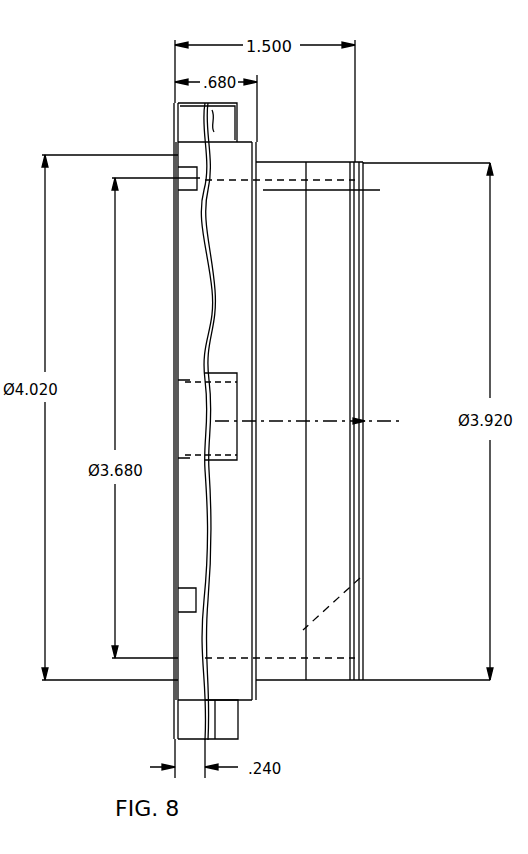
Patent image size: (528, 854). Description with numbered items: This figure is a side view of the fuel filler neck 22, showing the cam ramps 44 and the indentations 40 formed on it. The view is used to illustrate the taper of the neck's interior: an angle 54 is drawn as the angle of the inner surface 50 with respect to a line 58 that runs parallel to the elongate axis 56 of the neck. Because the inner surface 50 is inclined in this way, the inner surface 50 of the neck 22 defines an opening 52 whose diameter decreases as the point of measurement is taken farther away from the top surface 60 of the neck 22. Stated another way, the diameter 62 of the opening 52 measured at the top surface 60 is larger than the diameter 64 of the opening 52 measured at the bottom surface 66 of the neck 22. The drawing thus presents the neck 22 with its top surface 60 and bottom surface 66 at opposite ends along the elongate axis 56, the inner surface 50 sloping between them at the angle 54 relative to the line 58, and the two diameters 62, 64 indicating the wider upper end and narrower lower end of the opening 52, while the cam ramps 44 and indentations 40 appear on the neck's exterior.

The fuel filler neck 22 is at (256, 700).
The indentations 40 is at (190, 165).
The cam ramps 44 is at (210, 292).
The inner surface 50 is at (284, 181).
The opening 52 is at (355, 597).
The angle 54 is at (284, 195).
The elongate axis 56 is at (400, 428).
The line 58 is at (362, 194).
The top surface 60 is at (176, 508).
The diameter 62 is at (118, 382).
The diameter 64 is at (366, 299).
The bottom surface 66 is at (352, 393).